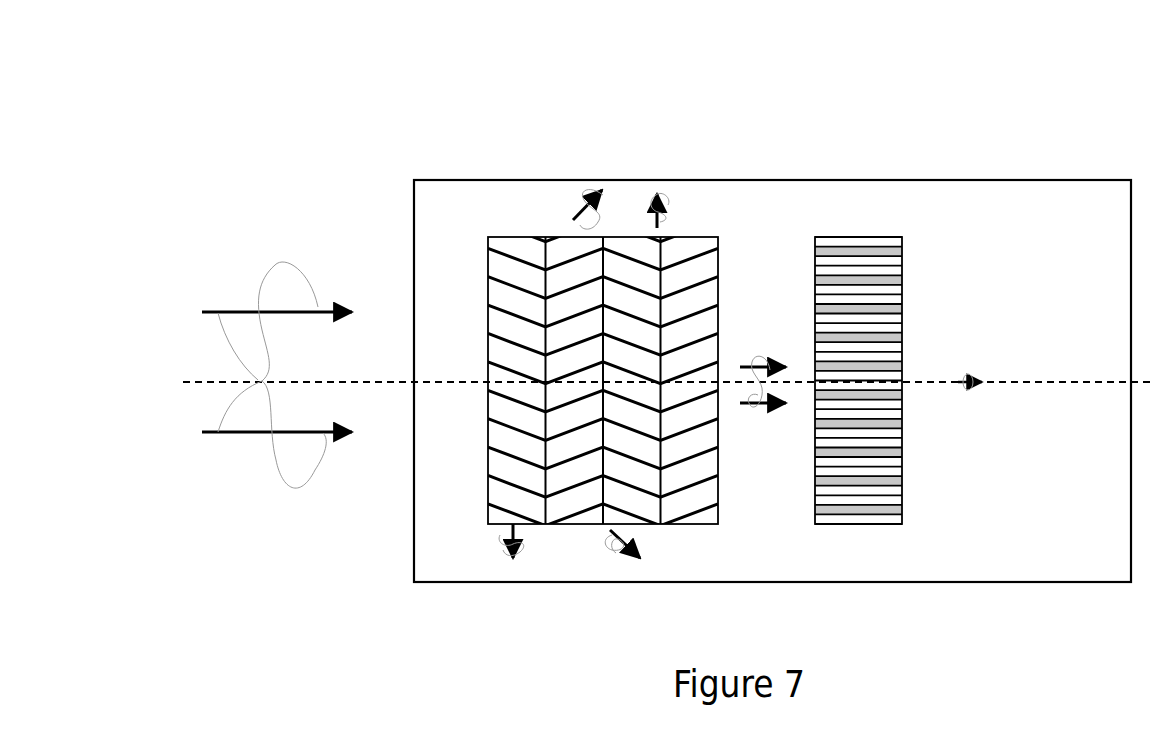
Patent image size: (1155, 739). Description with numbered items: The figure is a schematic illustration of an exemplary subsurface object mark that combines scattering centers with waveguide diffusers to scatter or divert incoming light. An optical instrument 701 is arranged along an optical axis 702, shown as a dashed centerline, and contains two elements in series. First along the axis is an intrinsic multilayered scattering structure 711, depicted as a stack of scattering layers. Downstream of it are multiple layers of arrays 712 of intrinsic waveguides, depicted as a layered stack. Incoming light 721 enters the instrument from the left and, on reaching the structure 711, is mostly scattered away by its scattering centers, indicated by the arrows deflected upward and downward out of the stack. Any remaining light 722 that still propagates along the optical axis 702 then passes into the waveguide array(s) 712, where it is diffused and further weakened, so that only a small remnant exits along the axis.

The optical instrument 701 is at (989, 125).
The optical axis 702 is at (1050, 383).
The intrinsic multilayered scattering structure 711 is at (558, 524).
The arrays of intrinsic waveguides 712 is at (853, 524).
The incoming light 721 is at (328, 273).
The remaining light 722 is at (759, 324).